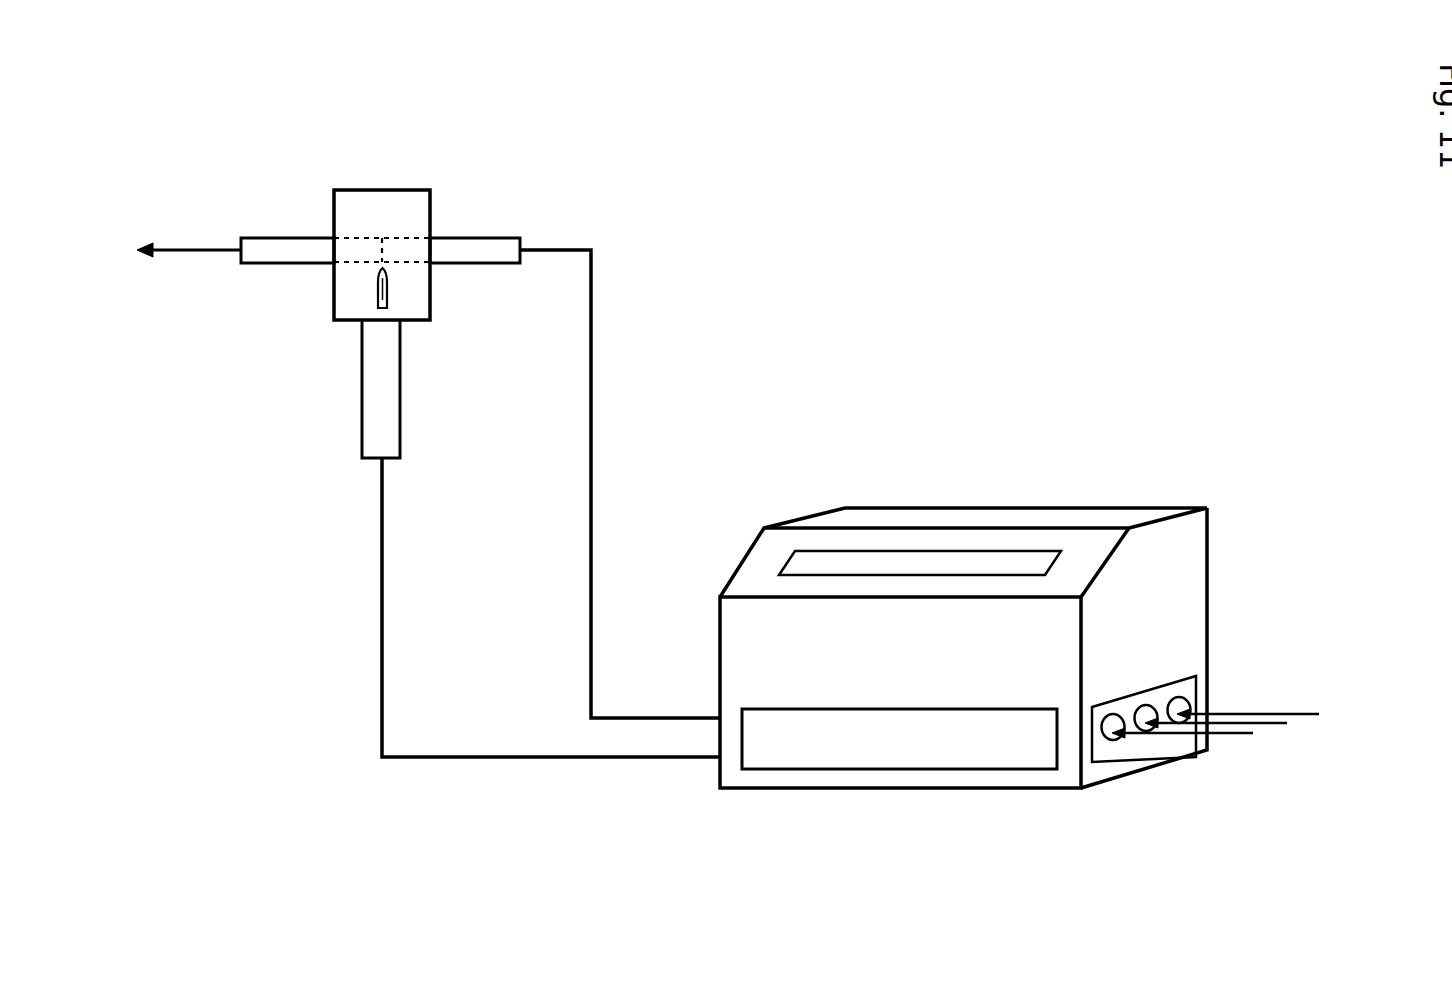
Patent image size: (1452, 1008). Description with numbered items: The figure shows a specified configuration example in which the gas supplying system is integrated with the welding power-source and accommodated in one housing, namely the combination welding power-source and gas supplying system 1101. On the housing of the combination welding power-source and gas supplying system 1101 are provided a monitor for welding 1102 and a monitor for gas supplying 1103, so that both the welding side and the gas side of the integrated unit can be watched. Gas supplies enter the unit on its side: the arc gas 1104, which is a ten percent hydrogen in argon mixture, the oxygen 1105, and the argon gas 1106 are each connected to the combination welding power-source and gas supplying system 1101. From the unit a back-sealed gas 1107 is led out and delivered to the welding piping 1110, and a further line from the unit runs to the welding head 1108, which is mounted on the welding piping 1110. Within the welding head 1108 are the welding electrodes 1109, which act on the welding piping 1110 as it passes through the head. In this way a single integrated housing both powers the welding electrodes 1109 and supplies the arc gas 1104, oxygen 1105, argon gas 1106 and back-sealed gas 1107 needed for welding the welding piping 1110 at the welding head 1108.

The combination welding power-source and gas supplying system 1101 is at (1191, 546).
The monitor for welding 1102 is at (891, 565).
The monitor for gas supplying 1103 is at (830, 747).
The arc gas (10% hydrogen/argon gas) 1104 is at (380, 685).
The oxygen 1105 is at (1267, 725).
The argon gas 1106 is at (1233, 735).
The back-sealed gas 1107 is at (591, 347).
The welding head 1108 is at (390, 198).
The welding electrodes 1109 is at (378, 290).
The welding piping 1110 is at (273, 250).